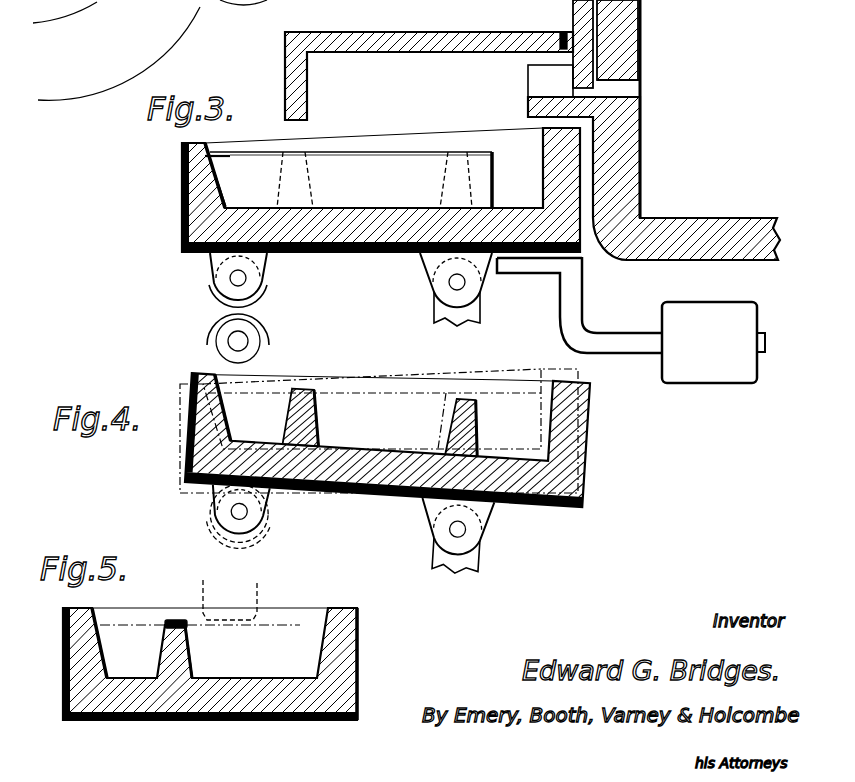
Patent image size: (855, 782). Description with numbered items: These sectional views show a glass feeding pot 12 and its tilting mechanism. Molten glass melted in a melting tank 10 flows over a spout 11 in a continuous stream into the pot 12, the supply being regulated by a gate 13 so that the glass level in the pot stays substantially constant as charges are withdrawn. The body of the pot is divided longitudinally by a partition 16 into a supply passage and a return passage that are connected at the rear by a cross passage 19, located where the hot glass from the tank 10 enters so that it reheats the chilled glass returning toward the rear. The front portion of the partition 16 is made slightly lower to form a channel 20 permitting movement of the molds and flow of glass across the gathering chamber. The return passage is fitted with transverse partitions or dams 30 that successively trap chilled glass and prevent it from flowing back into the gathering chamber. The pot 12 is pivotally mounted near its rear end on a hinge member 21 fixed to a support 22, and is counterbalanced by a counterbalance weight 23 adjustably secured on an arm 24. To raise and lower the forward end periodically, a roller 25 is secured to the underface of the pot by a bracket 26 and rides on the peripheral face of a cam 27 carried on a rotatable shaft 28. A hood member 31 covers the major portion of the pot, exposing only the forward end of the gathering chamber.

In FIG. 3, the melting tank 10 is at (654, 130).
In FIG. 3, the spout 11 is at (547, 78).
In FIG. 3, the pot 12 is at (410, 232).
In FIG. 4, the pot 12 is at (400, 473).
In FIG. 5, the pot 12 is at (185, 717).
In FIG. 3, the gate 13 is at (578, 10).
In FIG. 3, the partition 16 is at (368, 160).
In FIG. 5, the partition 16 is at (177, 620).
In FIG. 3, the cross passage 19 is at (503, 186).
In FIG. 3, the channel 20 is at (228, 160).
In FIG. 5, the channel 20 is at (192, 653).
In FIG. 3, the hinge member 21 is at (457, 282).
In FIG. 4, the hinge member 21 is at (458, 528).
In FIG. 3, the support 22 is at (470, 312).
In FIG. 3, the counterbalance weight 23 is at (713, 342).
In FIG. 3, the arm 24 is at (612, 338).
In FIG. 3, the roller 25 is at (265, 283).
In FIG. 4, the roller 25 is at (255, 530).
In FIG. 3, the bracket 26 is at (210, 258).
In FIG. 4, the bracket 26 is at (263, 500).
In FIG. 3, the cam 27 is at (188, 330).
In FIG. 3, the rotatable shaft 28 is at (243, 342).
In FIG. 3, the dams 30 is at (313, 177).
In FIG. 4, the dams 30 is at (318, 420).
In FIG. 5, the dams 30 is at (118, 645).
In FIG. 3, the hood member 31 is at (421, 42).